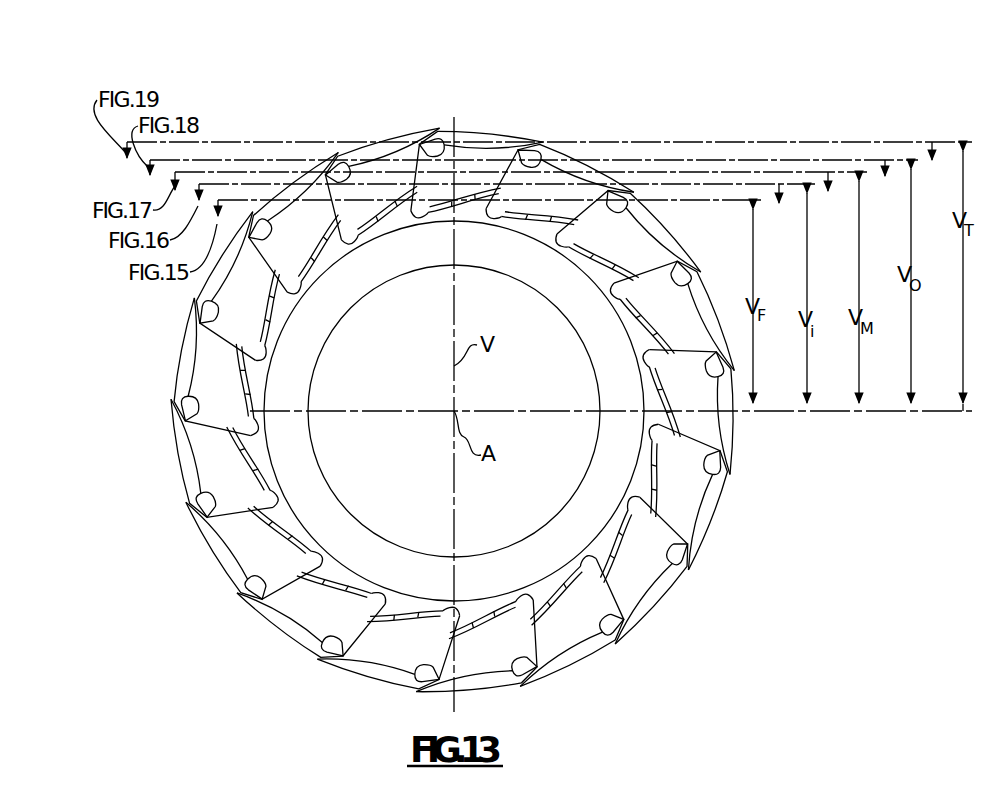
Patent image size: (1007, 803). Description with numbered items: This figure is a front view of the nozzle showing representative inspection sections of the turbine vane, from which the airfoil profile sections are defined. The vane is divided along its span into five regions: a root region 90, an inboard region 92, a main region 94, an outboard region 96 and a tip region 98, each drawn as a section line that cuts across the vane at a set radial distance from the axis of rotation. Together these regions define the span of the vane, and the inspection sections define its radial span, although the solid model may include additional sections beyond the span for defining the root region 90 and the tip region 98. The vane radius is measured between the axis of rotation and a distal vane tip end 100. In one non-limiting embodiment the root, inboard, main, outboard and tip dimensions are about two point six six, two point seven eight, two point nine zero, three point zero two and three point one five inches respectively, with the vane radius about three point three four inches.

The root region 90 is at (277, 200).
The inboard region 92 is at (273, 184).
The main region 94 is at (262, 172).
The outboard region 96 is at (252, 160).
The tip region 98 is at (223, 142).
The distal vane tip end 100 is at (465, 150).